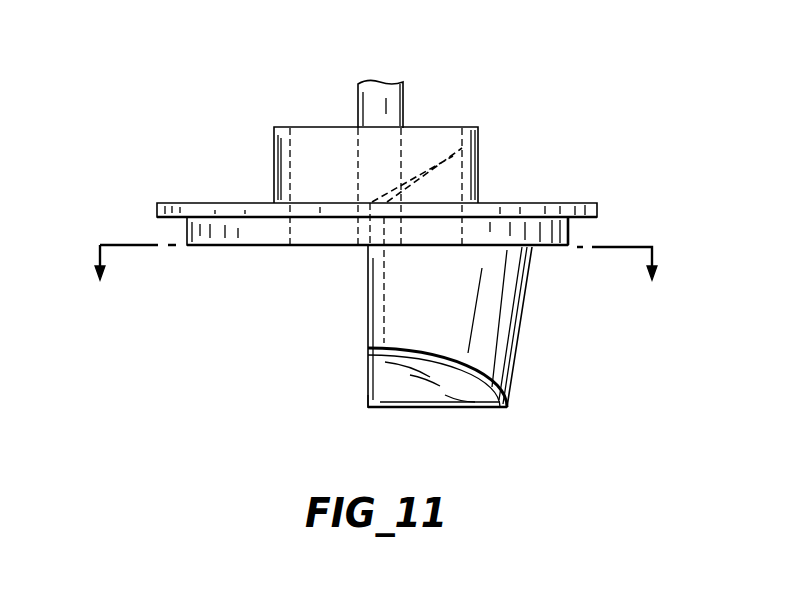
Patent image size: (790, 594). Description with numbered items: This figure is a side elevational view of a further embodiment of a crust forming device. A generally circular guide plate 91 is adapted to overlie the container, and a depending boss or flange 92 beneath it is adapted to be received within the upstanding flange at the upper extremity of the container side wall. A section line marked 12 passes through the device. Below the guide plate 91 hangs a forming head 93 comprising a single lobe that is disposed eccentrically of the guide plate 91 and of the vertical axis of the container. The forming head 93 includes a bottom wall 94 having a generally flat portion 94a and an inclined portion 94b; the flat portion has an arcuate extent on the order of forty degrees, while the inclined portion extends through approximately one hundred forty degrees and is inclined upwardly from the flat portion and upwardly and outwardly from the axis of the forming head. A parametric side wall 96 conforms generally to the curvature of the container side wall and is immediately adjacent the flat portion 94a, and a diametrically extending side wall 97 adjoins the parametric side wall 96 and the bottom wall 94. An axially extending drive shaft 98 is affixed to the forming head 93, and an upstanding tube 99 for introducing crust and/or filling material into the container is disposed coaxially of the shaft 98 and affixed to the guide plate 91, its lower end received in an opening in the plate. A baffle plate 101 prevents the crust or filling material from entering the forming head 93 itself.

The drive shaft 98 is at (367, 96).
The upstanding tube 99 is at (283, 166).
The baffle plate 101 is at (428, 167).
The guide plate 91 is at (552, 212).
The depending boss or flange 92 is at (240, 244).
The section line 12- 12 is at (375, 265).
The forming head 93 is at (405, 325).
The diametrically extending side wall 97 is at (383, 292).
The parametric side wall 96 is at (505, 332).
The bottom wall 94 is at (483, 410).
The flat portion 94a is at (388, 410).
The inclined portion 94b is at (428, 388).